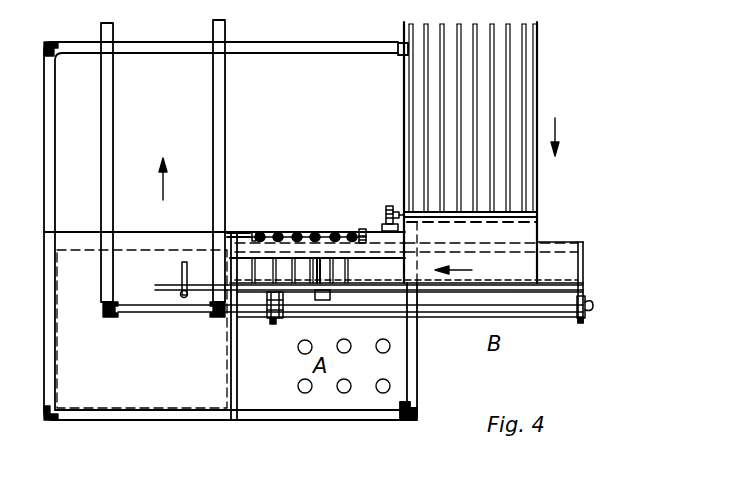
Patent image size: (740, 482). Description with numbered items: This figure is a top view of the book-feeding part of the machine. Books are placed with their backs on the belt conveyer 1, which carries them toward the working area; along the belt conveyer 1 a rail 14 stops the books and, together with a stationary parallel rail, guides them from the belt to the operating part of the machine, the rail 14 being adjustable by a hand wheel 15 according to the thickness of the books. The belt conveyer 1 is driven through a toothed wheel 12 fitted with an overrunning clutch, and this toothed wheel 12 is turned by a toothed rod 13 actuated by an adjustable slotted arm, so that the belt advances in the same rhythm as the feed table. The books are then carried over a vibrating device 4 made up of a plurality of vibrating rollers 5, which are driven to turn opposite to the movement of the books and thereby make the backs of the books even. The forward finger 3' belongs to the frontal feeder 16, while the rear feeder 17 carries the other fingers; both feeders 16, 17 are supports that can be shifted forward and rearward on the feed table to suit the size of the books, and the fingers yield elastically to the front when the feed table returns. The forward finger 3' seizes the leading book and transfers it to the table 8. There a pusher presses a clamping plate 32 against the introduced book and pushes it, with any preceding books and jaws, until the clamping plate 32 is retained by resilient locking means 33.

The belt conveyer 1 is at (516, 107).
The forward finger 3' is at (229, 289).
The vibrating device 4 is at (356, 228).
The vibrating rollers 5 is at (345, 270).
The table 8 is at (175, 403).
The toothed wheel 12 is at (388, 206).
The toothed rod 13 is at (385, 224).
The rail 14 is at (160, 287).
The hand wheel 15 is at (591, 316).
The frontal feeder 16 is at (203, 296).
The rear feeder 17 is at (331, 295).
The clamping plate 32 is at (143, 307).
The resilient locking means 33 is at (117, 253).